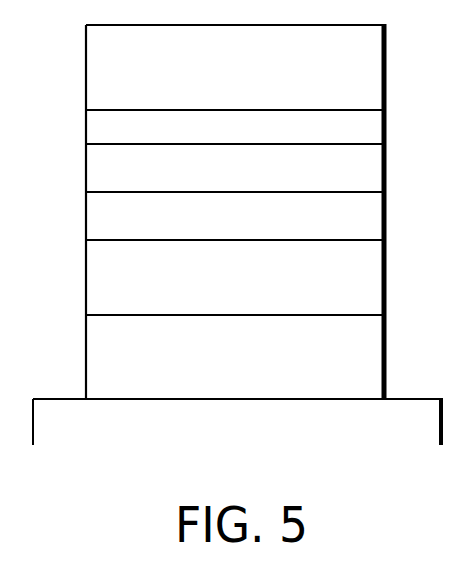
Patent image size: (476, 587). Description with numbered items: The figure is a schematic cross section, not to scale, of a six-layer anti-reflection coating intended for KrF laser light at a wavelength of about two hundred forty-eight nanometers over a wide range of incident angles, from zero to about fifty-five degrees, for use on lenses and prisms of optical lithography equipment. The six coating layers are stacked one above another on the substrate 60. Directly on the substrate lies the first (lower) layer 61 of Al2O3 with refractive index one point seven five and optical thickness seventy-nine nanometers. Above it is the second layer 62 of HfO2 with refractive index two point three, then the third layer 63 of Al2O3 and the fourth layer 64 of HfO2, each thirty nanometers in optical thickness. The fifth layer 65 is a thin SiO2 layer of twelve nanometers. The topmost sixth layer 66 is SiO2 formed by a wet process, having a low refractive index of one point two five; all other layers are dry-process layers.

The substrate 60 is at (303, 441).
The first (lower) layer 61 is at (247, 376).
The second layer 62 is at (247, 291).
The third layer 63 is at (247, 231).
The fourth layer 64 is at (247, 183).
The fifth layer 65 is at (247, 140).
The sixth layer 66 is at (247, 88).